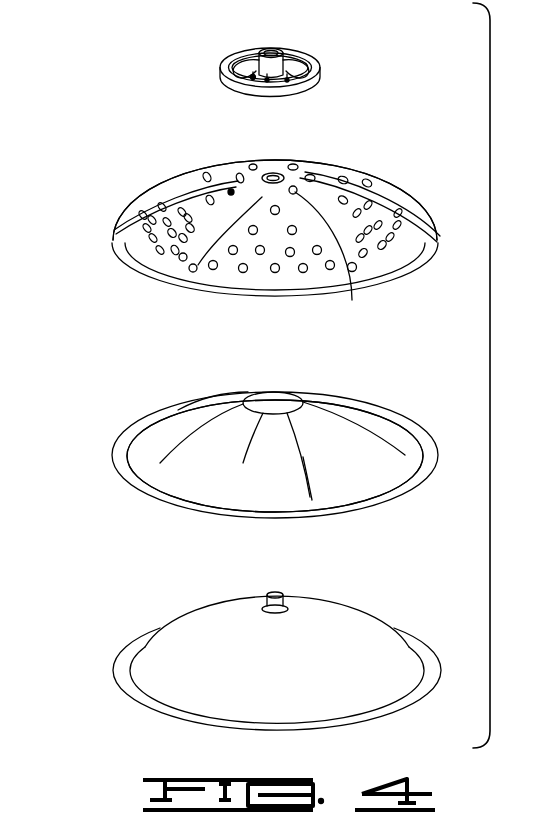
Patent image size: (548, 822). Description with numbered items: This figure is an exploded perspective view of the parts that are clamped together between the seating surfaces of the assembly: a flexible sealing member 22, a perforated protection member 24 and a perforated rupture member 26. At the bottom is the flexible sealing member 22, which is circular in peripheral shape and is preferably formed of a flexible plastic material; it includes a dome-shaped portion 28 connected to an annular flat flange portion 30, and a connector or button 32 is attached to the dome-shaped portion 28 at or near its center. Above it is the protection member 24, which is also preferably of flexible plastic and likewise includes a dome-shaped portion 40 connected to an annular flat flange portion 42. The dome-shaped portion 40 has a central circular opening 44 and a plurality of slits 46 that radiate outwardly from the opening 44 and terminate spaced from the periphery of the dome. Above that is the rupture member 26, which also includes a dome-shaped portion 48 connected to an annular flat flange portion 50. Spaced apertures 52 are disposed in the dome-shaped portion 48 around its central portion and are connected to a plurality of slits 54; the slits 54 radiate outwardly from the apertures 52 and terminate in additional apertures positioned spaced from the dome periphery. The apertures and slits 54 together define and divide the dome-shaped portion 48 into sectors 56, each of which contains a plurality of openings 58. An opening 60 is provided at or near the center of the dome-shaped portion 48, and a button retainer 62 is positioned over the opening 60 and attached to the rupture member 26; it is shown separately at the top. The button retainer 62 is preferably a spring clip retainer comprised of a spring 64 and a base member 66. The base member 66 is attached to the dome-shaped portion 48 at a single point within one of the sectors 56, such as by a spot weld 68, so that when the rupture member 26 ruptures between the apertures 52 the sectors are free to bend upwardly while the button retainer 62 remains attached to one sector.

The flexible sealing member 22 is at (122, 648).
The perforated protection member 24 is at (405, 419).
The perforated rupture member 26 is at (131, 205).
The dome-shaped portion 28 is at (284, 670).
The annular flat flange portion 30 is at (131, 694).
The connector or button 32 is at (288, 594).
The dome-shaped portion 40 is at (348, 466).
The annular flat flange portion 42 is at (115, 458).
The central circular opening 44 is at (258, 392).
The slits 46 is at (203, 422).
The dome-shaped portion 48 is at (315, 196).
The annular flat flange portion 50 is at (122, 243).
The apertures 52 is at (258, 203).
The slits 54 is at (168, 200).
The sectors 56 is at (150, 225).
The openings 58 is at (157, 204).
The opening 60 is at (276, 173).
The button retainer 62 is at (318, 50).
The spring 64 is at (238, 64).
The base member 66 is at (327, 68).
The spot weld 68 is at (262, 62).